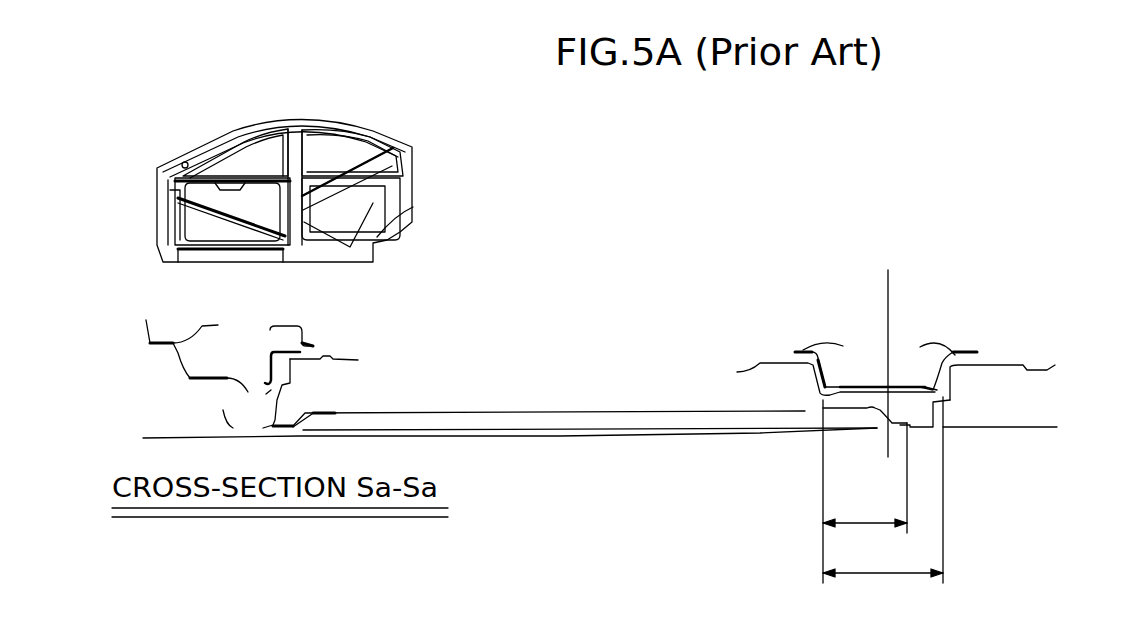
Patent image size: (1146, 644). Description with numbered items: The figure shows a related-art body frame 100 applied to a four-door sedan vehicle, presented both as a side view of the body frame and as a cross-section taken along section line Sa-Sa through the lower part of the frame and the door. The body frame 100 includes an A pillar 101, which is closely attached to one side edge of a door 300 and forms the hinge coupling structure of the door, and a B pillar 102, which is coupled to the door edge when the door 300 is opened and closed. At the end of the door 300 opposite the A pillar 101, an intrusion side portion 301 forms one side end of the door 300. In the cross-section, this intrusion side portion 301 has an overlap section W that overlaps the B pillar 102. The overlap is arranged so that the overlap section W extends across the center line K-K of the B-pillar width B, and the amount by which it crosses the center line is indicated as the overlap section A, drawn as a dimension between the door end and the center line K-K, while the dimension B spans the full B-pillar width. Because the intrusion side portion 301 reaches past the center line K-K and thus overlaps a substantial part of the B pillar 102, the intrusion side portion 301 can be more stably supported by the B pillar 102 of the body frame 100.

The body frame 100 is at (272, 253).
The A pillar 101 is at (175, 195).
The B pillar 102 is at (317, 182).
The door 300 is at (212, 227).
The intrusion side portion 301 is at (822, 398).
The section line Sa- Sa is at (163, 205).
The center line K- K is at (891, 361).
The overlap section A is at (865, 491).
The B-pillar width B is at (883, 490).
The overlap section W is at (988, 403).